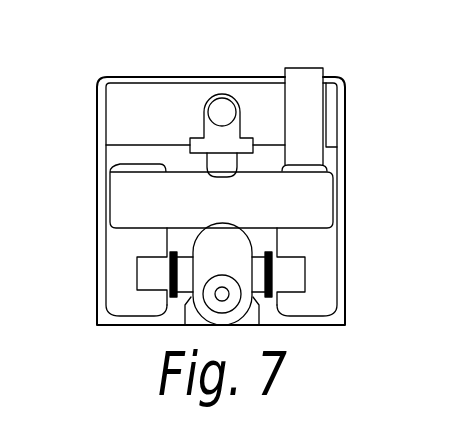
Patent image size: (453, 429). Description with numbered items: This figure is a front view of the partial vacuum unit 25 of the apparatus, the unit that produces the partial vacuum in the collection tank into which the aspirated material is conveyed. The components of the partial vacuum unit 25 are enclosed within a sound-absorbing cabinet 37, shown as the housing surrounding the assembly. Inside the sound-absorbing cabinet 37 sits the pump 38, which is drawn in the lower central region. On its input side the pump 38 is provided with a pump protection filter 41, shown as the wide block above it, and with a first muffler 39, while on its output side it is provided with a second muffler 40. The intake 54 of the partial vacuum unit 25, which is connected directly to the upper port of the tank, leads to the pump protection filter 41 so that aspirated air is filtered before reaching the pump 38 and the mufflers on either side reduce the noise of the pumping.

The partial vacuum unit 25 is at (335, 72).
The sound-absorbing cabinet 37 is at (97, 136).
The pump 38 is at (228, 292).
The first muffler 39 is at (123, 274).
The second muffler 40 is at (317, 250).
The pump protection filter 41 is at (147, 200).
The intake 54 is at (222, 93).